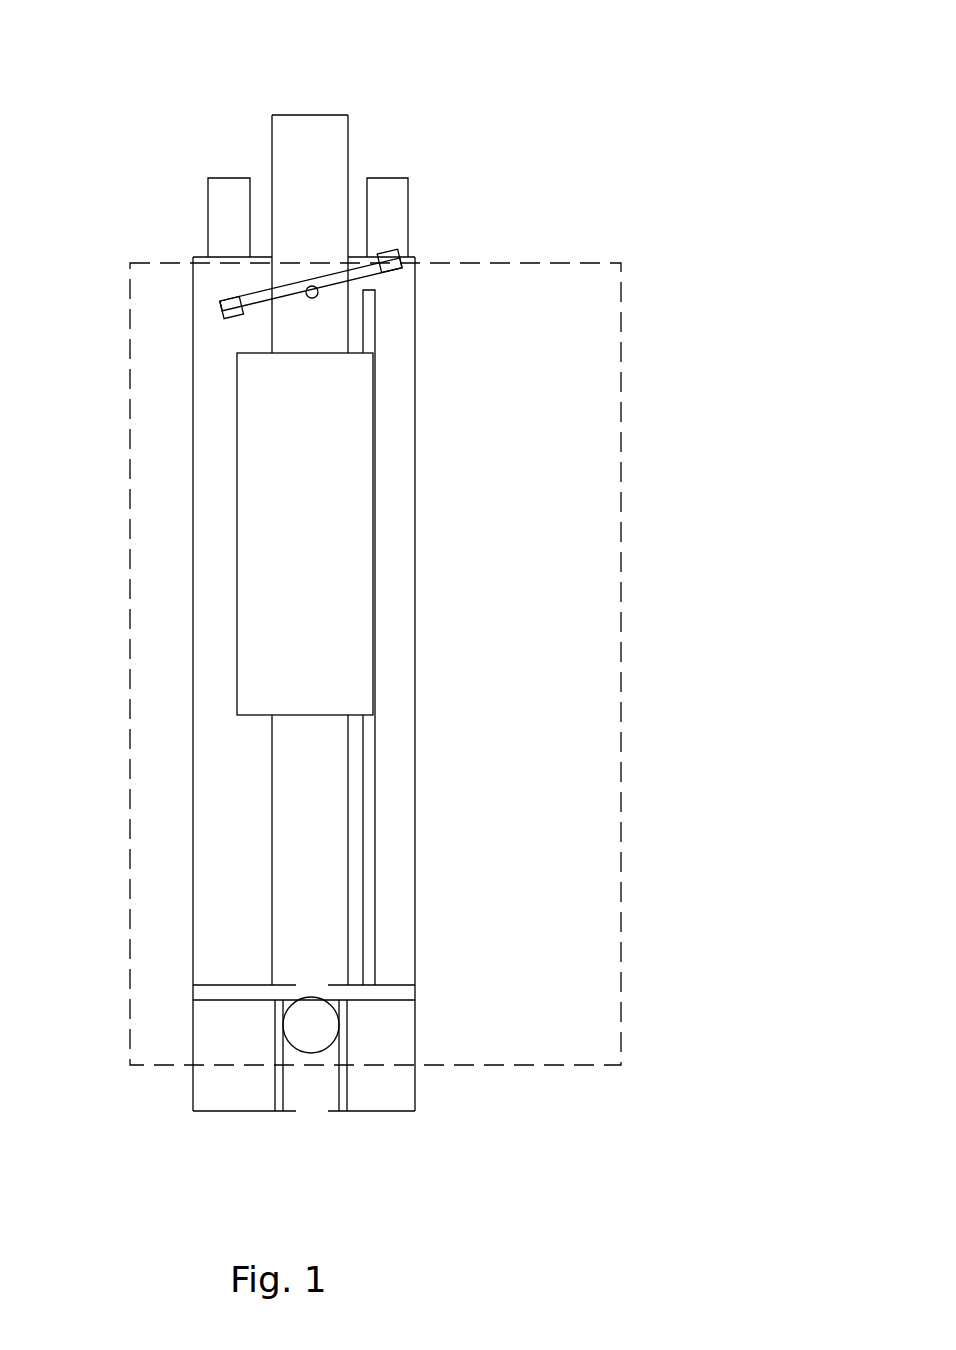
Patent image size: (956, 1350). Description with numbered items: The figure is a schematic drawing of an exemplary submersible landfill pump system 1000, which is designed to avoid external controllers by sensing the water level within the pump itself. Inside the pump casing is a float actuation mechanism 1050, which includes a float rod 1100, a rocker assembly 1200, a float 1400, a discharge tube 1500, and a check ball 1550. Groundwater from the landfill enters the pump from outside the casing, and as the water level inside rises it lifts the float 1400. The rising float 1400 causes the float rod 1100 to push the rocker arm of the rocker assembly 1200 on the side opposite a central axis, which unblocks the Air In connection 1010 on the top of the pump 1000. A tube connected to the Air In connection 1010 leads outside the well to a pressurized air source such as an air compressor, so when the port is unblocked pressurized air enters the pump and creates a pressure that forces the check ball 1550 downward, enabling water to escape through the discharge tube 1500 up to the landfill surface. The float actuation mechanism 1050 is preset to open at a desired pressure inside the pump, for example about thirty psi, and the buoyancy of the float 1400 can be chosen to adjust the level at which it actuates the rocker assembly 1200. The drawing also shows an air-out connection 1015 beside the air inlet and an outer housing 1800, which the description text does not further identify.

The submersible landfill pump system 1000 is at (304, 87).
The Air In connection 1010 is at (213, 235).
The air outlet 1015 is at (403, 220).
The float actuation mechanism 1050 is at (621, 679).
The float rod 1100 is at (377, 766).
The rocker assembly 1200 is at (388, 282).
The float 1400 is at (347, 465).
The discharge tube 1500 is at (304, 915).
The check ball 1550 is at (320, 1033).
The outer housing 1800 is at (193, 505).